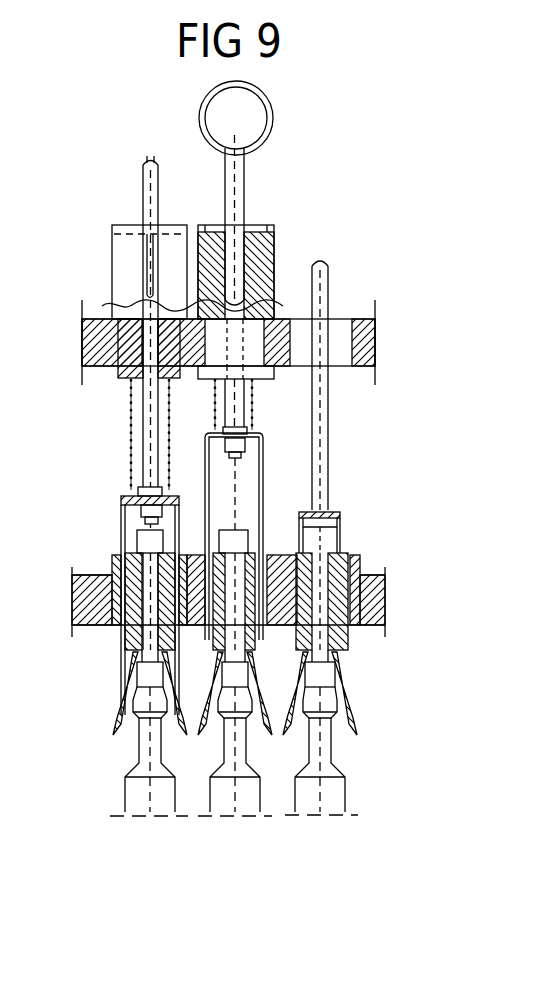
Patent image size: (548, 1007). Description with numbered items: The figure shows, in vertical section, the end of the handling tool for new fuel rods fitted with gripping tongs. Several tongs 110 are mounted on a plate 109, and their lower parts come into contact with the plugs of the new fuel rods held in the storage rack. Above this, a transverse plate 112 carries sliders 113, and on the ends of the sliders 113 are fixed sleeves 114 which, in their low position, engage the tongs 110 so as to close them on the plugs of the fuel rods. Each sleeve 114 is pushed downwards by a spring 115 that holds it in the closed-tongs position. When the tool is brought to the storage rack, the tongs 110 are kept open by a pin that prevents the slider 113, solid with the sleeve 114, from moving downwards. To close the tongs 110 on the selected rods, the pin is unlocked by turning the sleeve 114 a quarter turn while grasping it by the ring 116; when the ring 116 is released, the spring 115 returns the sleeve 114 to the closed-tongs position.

The plate 109 is at (368, 573).
The tongs 110 is at (112, 555).
The transverse plate 112 is at (356, 323).
The slider 113 is at (246, 203).
The sleeve 114 is at (258, 487).
The spring 115 is at (254, 419).
The ring 116 is at (274, 108).